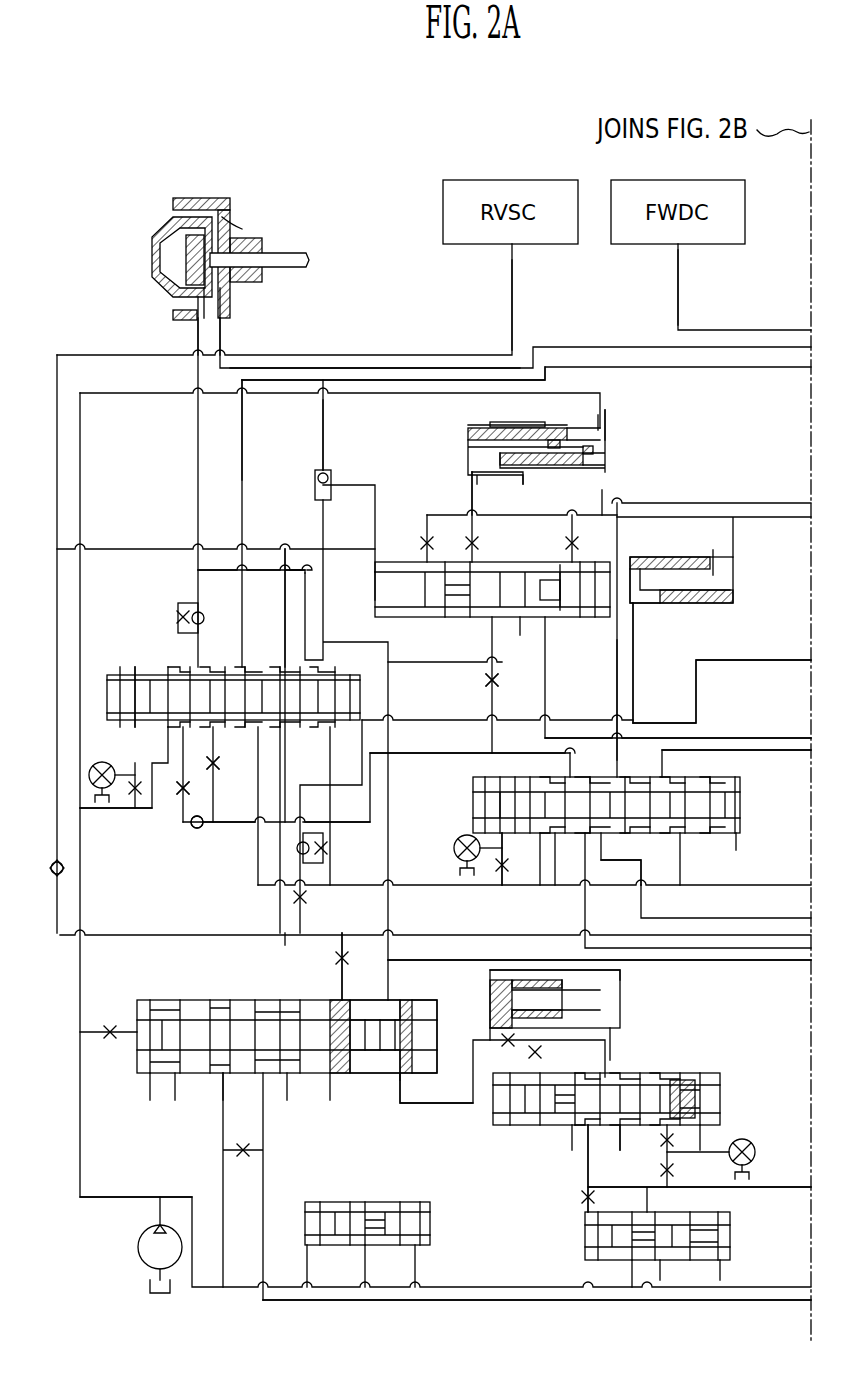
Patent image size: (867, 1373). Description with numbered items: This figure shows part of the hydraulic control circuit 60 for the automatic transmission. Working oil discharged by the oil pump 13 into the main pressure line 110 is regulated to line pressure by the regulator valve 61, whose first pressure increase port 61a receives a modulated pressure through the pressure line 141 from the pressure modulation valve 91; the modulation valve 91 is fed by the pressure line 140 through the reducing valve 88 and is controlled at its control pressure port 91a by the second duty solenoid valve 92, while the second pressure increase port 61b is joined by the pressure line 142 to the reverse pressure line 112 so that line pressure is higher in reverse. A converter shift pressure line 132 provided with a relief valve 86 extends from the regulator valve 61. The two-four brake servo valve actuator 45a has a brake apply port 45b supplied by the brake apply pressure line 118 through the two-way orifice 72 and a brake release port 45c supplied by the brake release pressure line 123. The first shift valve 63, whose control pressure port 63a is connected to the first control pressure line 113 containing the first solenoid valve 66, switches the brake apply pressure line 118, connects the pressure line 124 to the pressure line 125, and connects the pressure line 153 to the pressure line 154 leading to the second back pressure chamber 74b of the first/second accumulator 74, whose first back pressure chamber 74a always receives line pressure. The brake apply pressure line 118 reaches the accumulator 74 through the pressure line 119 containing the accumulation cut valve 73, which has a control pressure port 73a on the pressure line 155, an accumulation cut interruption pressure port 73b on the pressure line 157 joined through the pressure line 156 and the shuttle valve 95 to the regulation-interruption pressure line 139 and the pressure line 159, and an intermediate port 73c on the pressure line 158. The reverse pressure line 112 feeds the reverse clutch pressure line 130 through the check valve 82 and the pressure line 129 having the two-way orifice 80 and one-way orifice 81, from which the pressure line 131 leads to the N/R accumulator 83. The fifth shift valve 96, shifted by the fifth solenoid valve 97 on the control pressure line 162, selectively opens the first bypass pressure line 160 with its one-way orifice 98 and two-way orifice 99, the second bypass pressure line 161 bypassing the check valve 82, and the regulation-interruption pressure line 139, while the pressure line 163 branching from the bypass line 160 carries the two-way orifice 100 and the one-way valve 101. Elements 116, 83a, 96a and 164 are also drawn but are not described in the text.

The hydraulic control circuit 60 is at (110, 270).
The 2/4 brake actuator 45a is at (240, 226).
The brake apply port 45b is at (197, 322).
The brake release port 45c is at (227, 320).
The brake release pressure line 123 is at (316, 365).
The reverse clutch pressure line 130 is at (512, 276).
The oil passage 116 is at (678, 276).
The brake apply pressure line 118 is at (197, 415).
The pressure line 156 is at (321, 411).
The pressure line 157 is at (355, 478).
The second back pressure chamber 74b is at (522, 422).
The first back pressure chamber 74a is at (611, 430).
The first/second (1/2) accumulator 74 is at (618, 452).
The regulation-interruption pressure line 139 is at (678, 384).
The shuttle valve 95 is at (313, 481).
The pressure line 119 is at (472, 480).
The second bypass pressure line 161 is at (130, 543).
The pressure line 159 is at (322, 532).
The accumulation cut interruption pressure port 73b is at (375, 560).
The accumulation cut valve 73 is at (413, 558).
The control pressure port 73a is at (566, 558).
The piston rod 83a is at (715, 555).
The pressure line 155 is at (748, 498).
The neutral/reverse (N/R) accumulator 83 is at (740, 586).
The first bypass pressure line 160 is at (193, 566).
The one-way orifice 98 is at (203, 613).
The fifth shift valve 96 is at (120, 663).
The valve spool end 96a is at (138, 660).
The pressure line 131 is at (635, 626).
The intermediate port 73c is at (520, 618).
The two-way orifice 72 is at (495, 679).
The pressure line 154 is at (615, 669).
The pressure line 129 is at (660, 718).
The pressure line 158 is at (741, 735).
The pressure line 125 is at (791, 748).
The fifth solenoid valve 97 is at (100, 758).
The two-way orifice 99 is at (218, 768).
The pressure line 163 is at (312, 758).
The control pressure port 63a is at (498, 768).
The first shift valve 63 is at (697, 776).
The control pressure line 162 is at (116, 806).
The two-way orifice 100 is at (183, 793).
The one-way valve 101 is at (195, 825).
The oil passage 164 is at (207, 820).
The one-way orifice 81 is at (329, 846).
The first solenoid valve 66 is at (455, 836).
The pressure line 124 is at (682, 871).
The pressure line 153 is at (787, 918).
The check valve 82 is at (64, 868).
The two-way orifice 80 is at (312, 896).
The reverse pressure line 112 is at (428, 928).
The first control pressure line 113 is at (508, 886).
The regulator valve 61 is at (142, 1001).
The pressure line 142 is at (340, 976).
The first pressure increase port 61a is at (400, 1073).
The second pressure increase port 61b is at (330, 1086).
The pressure line 141 is at (420, 1103).
The pressure modulation valve 91 is at (650, 1068).
The second duty solenoid valve 92 is at (752, 1138).
The control pressure port 91a is at (650, 1146).
The pressure line 140 is at (588, 1178).
The main pressure line 110 is at (145, 1195).
The relief valve 86 is at (322, 1200).
The oil pump 13 is at (137, 1246).
The reducing valve 88 is at (586, 1230).
The converter shift pressure line 132 is at (485, 1298).